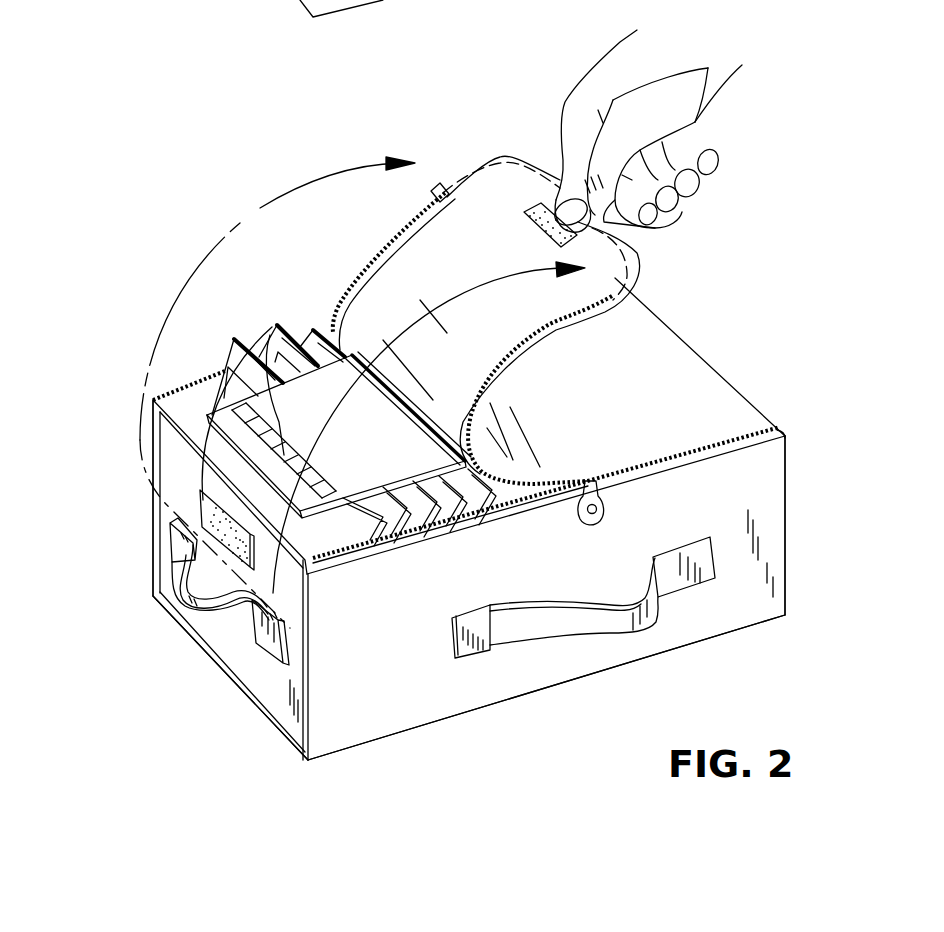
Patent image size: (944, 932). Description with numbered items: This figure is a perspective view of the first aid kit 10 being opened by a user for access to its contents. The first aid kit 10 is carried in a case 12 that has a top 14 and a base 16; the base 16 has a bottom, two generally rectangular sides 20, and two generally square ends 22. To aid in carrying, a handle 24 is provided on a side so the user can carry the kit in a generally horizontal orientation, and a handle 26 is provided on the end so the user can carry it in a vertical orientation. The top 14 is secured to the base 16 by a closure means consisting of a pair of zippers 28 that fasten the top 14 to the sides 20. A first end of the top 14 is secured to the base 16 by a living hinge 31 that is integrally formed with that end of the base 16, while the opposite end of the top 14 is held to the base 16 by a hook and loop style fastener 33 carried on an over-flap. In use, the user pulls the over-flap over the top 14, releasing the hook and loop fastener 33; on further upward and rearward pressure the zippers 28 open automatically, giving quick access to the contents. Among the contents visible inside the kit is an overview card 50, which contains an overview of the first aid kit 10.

The first aid kit 10 is at (772, 304).
The case 12 is at (787, 424).
The top 14 is at (462, 215).
The base 16 is at (776, 532).
The sides 20 is at (727, 620).
The ends 22 is at (247, 670).
The handle 24 is at (594, 620).
The handle 26 is at (157, 597).
The zippers 28 is at (331, 322).
The living hinge 31 is at (663, 334).
The hook and loop style fastener 33 is at (198, 506).
The overview card 50 is at (237, 353).